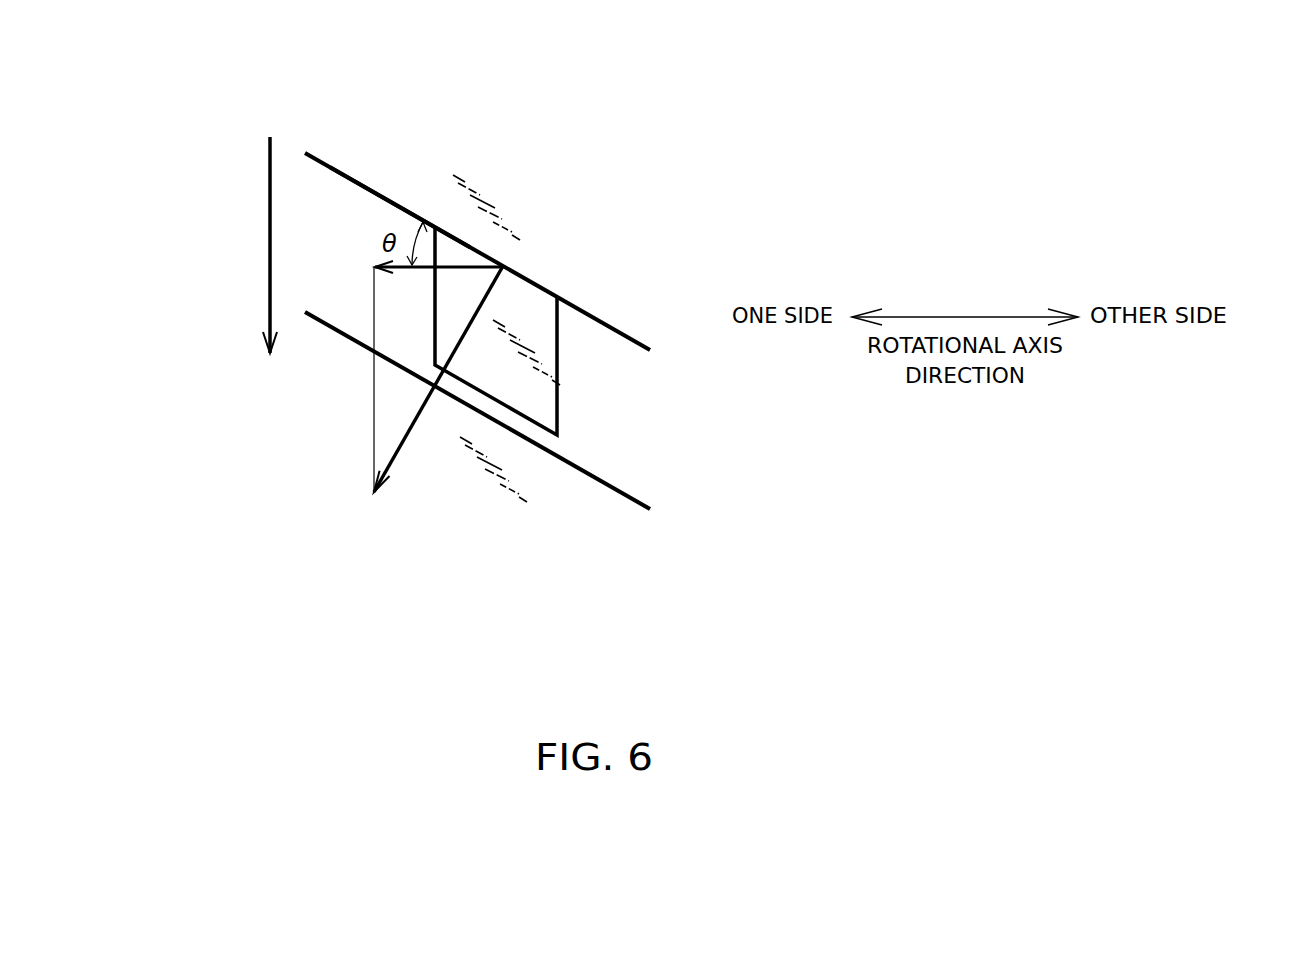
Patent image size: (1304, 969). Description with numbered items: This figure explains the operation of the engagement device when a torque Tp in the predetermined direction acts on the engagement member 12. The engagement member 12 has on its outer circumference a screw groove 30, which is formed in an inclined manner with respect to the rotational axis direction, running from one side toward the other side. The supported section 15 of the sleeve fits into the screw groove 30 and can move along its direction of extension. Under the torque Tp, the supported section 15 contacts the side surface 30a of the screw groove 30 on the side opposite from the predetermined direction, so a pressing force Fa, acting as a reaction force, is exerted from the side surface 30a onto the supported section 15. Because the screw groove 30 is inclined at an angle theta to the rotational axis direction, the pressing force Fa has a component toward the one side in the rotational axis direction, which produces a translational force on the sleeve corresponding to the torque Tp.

The screw groove 30 is at (613, 385).
The side surface 30a is at (397, 207).
The engagement member 12 is at (561, 493).
The supported section 15 is at (527, 323).
The torque Tp is at (268, 237).
The pressing force Fa is at (413, 422).